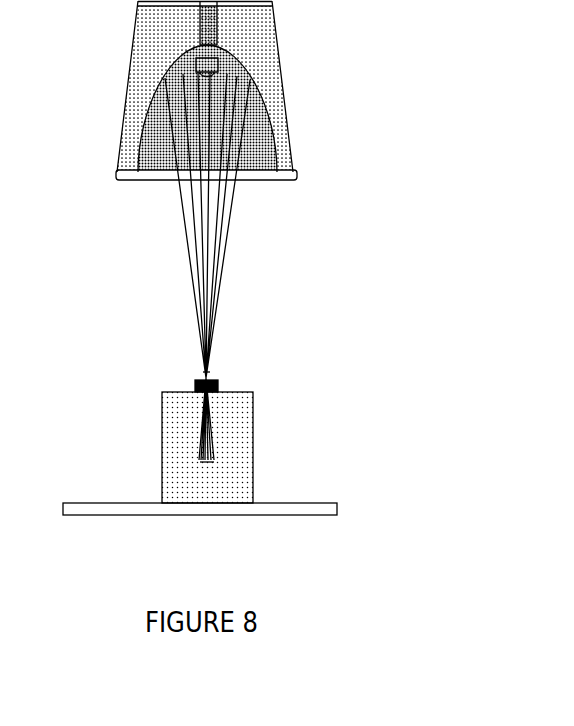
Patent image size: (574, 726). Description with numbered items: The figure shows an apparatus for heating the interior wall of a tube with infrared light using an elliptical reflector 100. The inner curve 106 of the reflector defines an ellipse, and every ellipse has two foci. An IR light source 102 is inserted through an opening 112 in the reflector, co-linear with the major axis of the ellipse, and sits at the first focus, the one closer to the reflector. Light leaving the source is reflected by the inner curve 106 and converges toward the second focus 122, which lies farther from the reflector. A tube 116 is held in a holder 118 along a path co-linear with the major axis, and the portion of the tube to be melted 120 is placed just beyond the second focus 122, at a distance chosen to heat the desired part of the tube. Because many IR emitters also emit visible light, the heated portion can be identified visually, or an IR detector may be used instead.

The elliptical reflector 100 is at (250, 45).
The IR light source 102 is at (215, 57).
The inner curve 106 is at (263, 133).
The opening 112 is at (200, 20).
The tube 116 is at (215, 384).
The holder 118 is at (253, 433).
The portion of the tube to be melted 120 is at (200, 445).
The second focus 122 is at (203, 371).